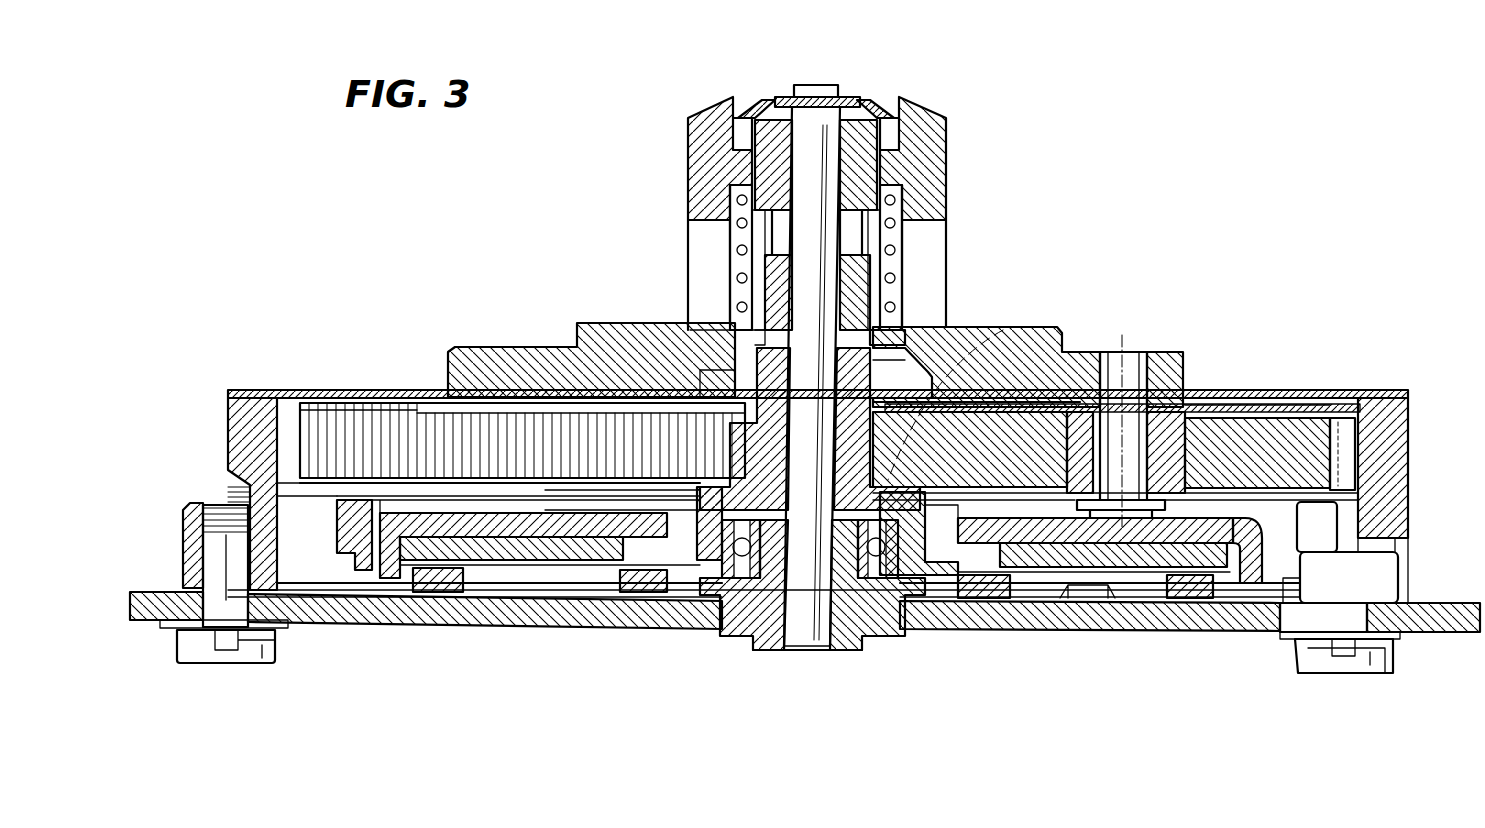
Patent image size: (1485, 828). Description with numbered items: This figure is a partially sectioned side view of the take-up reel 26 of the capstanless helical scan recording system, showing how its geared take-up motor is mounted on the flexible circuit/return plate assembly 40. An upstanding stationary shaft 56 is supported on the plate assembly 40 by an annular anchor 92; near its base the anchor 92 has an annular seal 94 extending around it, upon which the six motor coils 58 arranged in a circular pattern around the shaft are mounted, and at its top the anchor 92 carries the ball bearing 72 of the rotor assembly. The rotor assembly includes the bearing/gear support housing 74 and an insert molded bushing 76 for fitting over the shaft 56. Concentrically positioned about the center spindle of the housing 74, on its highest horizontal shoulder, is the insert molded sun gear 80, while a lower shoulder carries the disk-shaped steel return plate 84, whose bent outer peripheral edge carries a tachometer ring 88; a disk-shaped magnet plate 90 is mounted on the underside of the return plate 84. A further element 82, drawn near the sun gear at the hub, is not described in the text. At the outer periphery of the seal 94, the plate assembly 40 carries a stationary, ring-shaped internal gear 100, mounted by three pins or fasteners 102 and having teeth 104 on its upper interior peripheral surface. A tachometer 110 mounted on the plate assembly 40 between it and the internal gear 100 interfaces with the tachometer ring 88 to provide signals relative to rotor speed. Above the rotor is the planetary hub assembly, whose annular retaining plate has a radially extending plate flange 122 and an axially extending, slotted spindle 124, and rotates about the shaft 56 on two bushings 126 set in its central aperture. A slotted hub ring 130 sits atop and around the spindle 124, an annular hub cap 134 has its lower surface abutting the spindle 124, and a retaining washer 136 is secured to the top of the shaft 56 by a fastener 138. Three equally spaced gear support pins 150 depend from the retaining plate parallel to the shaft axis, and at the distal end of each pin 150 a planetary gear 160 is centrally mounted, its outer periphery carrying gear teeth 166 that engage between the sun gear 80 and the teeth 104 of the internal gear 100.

The take-up reel 26 is at (1213, 112).
The flexible circuit/return plate assembly 40 is at (315, 610).
The shaft 56 is at (823, 628).
The motor coils 58 is at (440, 572).
The ball bearing 72 is at (735, 525).
The bearing/gear support housing 74 is at (935, 552).
The insert molded bushing 76 is at (903, 330).
The insert molded sun gear 80 is at (685, 322).
The hub flange 82 is at (880, 378).
The return plate 84 is at (478, 530).
The tachometer ring 88 is at (342, 540).
The magnet plate 90 is at (522, 548).
The annular anchor 92 is at (768, 630).
The annular seal 94 is at (585, 595).
The stationary internal gear 100 is at (233, 420).
The pins or fasteners 102 is at (195, 648).
The teeth 104 is at (340, 400).
The tachometer 110 is at (1320, 540).
The plate flange 122 is at (525, 345).
The spindle 124 is at (740, 265).
The bushings 126 is at (866, 102).
The hub ring 130 is at (705, 180).
The annular hub cap 134 is at (752, 113).
The retaining washer 136 is at (790, 96).
The fastener 138 is at (824, 88).
The gear support pin 150 is at (1135, 354).
The planetary gear 160 is at (1253, 430).
The gear teeth 166 is at (495, 437).